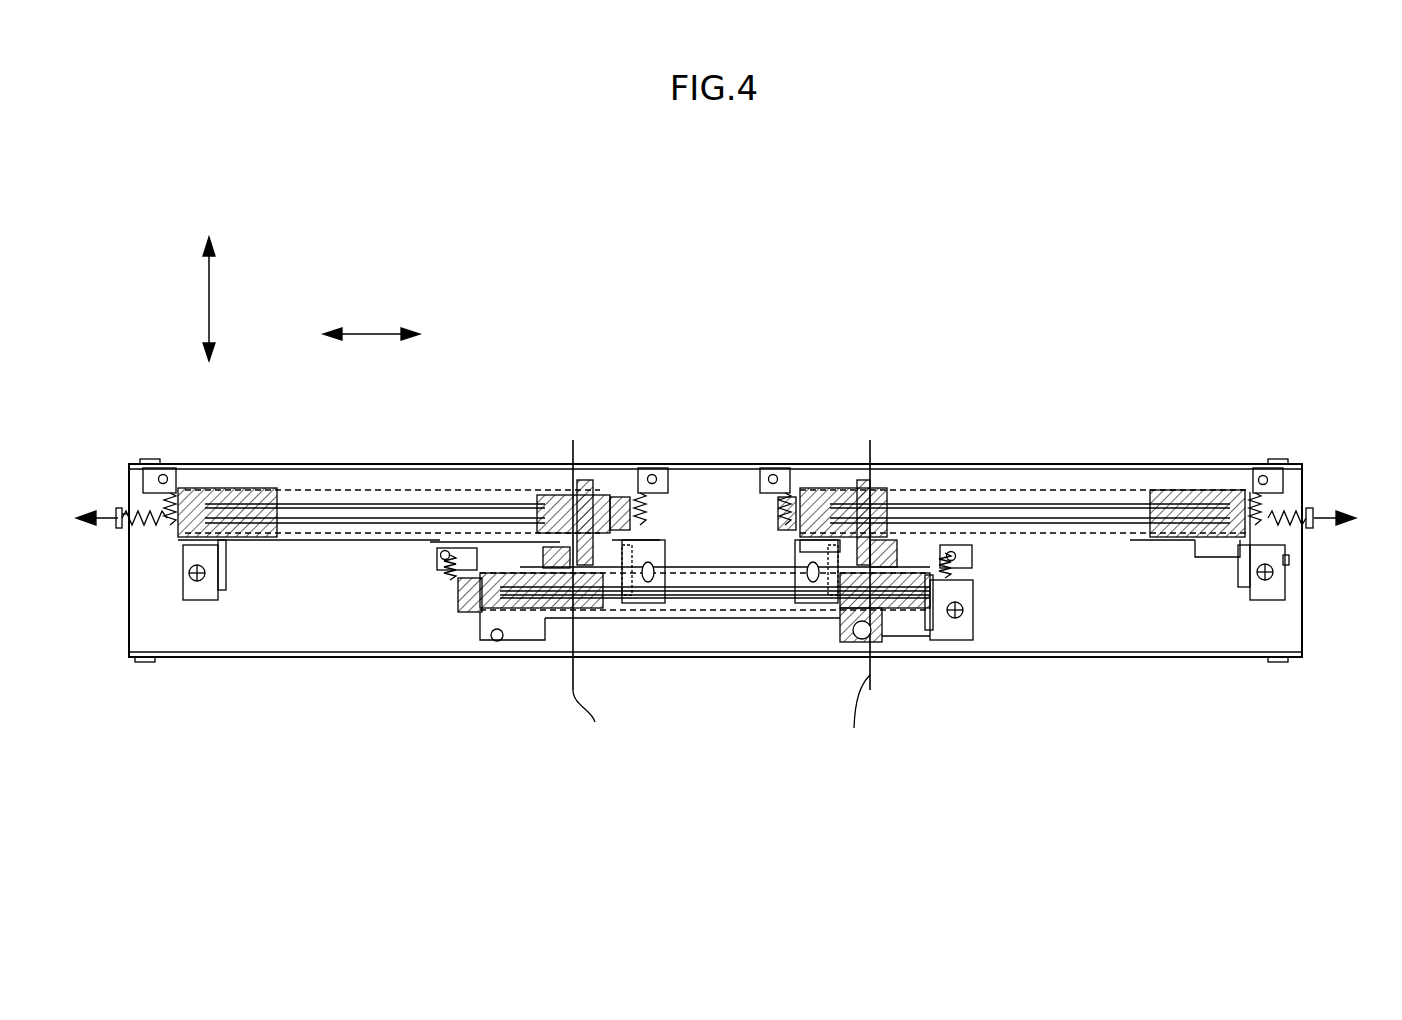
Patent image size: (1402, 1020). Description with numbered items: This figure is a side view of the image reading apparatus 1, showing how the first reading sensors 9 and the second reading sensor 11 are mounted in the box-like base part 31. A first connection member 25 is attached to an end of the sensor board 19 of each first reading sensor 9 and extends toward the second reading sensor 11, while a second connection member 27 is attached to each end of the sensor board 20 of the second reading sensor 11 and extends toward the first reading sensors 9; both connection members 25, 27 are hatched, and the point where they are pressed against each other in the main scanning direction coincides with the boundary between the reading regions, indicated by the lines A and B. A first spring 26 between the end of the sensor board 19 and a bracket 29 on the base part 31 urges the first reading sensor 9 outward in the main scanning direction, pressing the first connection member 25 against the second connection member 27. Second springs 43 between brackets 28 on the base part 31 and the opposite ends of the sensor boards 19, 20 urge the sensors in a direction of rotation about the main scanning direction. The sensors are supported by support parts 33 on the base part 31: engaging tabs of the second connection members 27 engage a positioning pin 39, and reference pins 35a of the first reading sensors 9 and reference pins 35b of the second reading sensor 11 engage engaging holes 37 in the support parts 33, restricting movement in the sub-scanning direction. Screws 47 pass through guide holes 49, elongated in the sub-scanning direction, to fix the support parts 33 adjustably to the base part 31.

The image reading apparatus 1 is at (716, 240).
The first reading sensor 9 is at (385, 494).
The second reading sensor 11 is at (737, 625).
The sensor board 19 is at (1005, 505).
The sensor board 20 is at (662, 612).
The first connection member 25 is at (836, 505).
The first spring 26 is at (133, 500).
The second connection member 27 is at (905, 520).
The bracket 28 is at (160, 468).
The bracket 29 is at (1315, 525).
The base part 31 is at (1130, 652).
The support part 33 is at (795, 562).
The reference pin 35a is at (230, 553).
The reference pin 35b is at (945, 622).
The engaging hole 37 is at (226, 553).
The positioning pin 39 is at (860, 642).
The second spring 43 is at (175, 500).
The screw 47 is at (1270, 600).
The guide hole 49 is at (1290, 595).